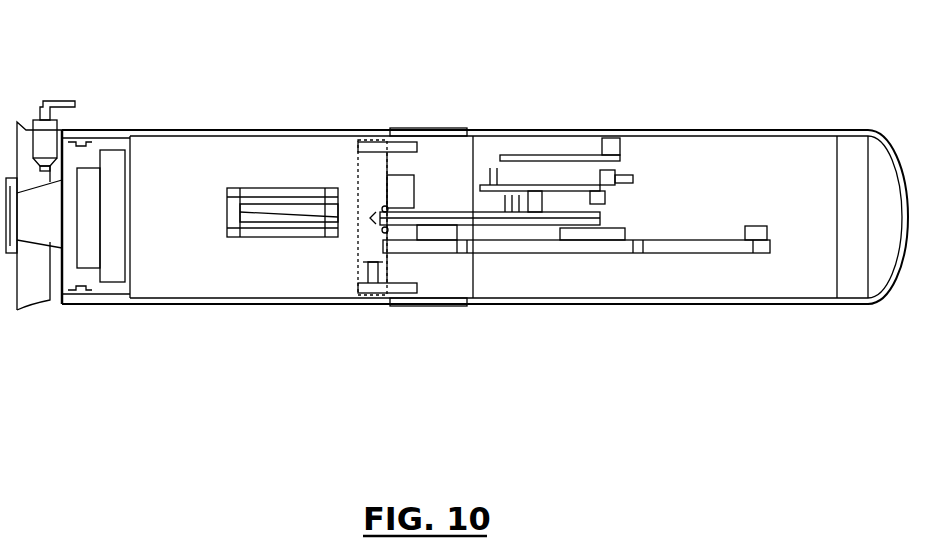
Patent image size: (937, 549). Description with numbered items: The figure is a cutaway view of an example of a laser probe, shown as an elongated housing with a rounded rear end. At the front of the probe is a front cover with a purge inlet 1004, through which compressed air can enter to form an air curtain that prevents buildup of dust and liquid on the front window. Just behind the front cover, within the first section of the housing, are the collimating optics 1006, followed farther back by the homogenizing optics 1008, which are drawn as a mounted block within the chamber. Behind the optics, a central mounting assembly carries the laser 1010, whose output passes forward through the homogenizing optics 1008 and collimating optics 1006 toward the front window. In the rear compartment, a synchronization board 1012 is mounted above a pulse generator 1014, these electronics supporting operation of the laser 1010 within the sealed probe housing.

The purge inlet 1004 is at (57, 93).
The collimating optics 1006 is at (165, 244).
The homogenizing optics 1008 is at (280, 182).
The laser 1010 is at (398, 234).
The synchronization board 1012 is at (638, 162).
The pulse generator 1014 is at (581, 234).